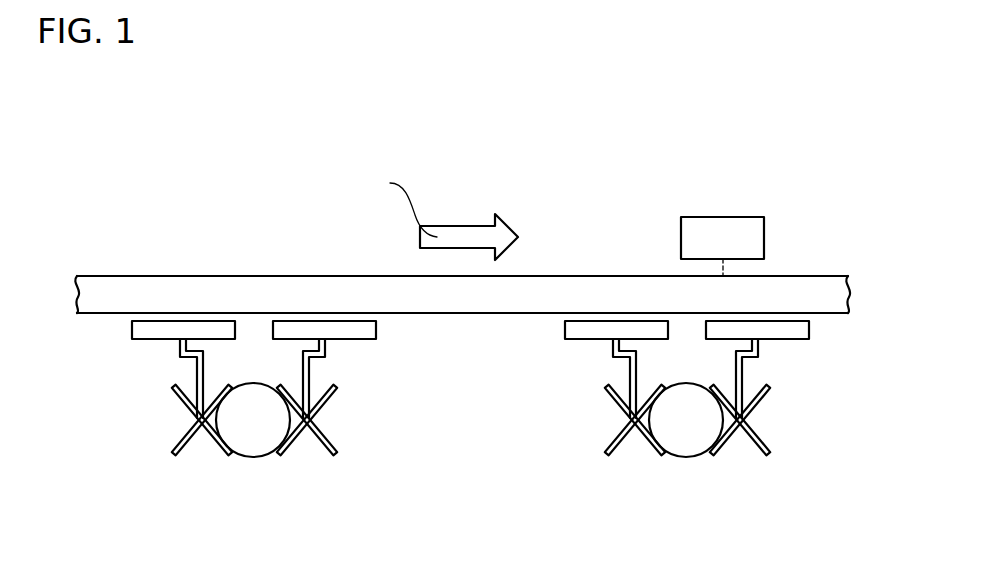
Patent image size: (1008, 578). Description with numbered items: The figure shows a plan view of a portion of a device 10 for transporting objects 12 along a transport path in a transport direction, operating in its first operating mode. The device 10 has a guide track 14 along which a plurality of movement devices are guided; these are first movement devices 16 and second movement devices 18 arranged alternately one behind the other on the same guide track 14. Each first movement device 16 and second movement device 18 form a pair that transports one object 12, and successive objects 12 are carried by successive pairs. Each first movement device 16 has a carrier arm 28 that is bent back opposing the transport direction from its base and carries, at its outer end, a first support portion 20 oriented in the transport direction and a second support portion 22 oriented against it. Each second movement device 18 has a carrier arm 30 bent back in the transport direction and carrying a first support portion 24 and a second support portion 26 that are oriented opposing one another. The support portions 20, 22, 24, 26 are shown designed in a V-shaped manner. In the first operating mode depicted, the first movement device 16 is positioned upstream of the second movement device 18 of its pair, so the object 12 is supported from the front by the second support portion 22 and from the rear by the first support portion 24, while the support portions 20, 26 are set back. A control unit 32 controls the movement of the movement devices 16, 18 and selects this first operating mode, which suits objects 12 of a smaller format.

The device 10 is at (470, 92).
The object 12 is at (253, 445).
The guide track 14 is at (227, 300).
The first movement device 16 is at (353, 330).
The second movement device 18 is at (138, 330).
The first support portion 20 is at (322, 410).
The second support portion 22 is at (298, 438).
The first support portion 24 is at (212, 440).
The second support portion 26 is at (178, 432).
The carrier arm 28 is at (325, 362).
The carrier arm 30 is at (178, 400).
The control unit 32 is at (758, 232).